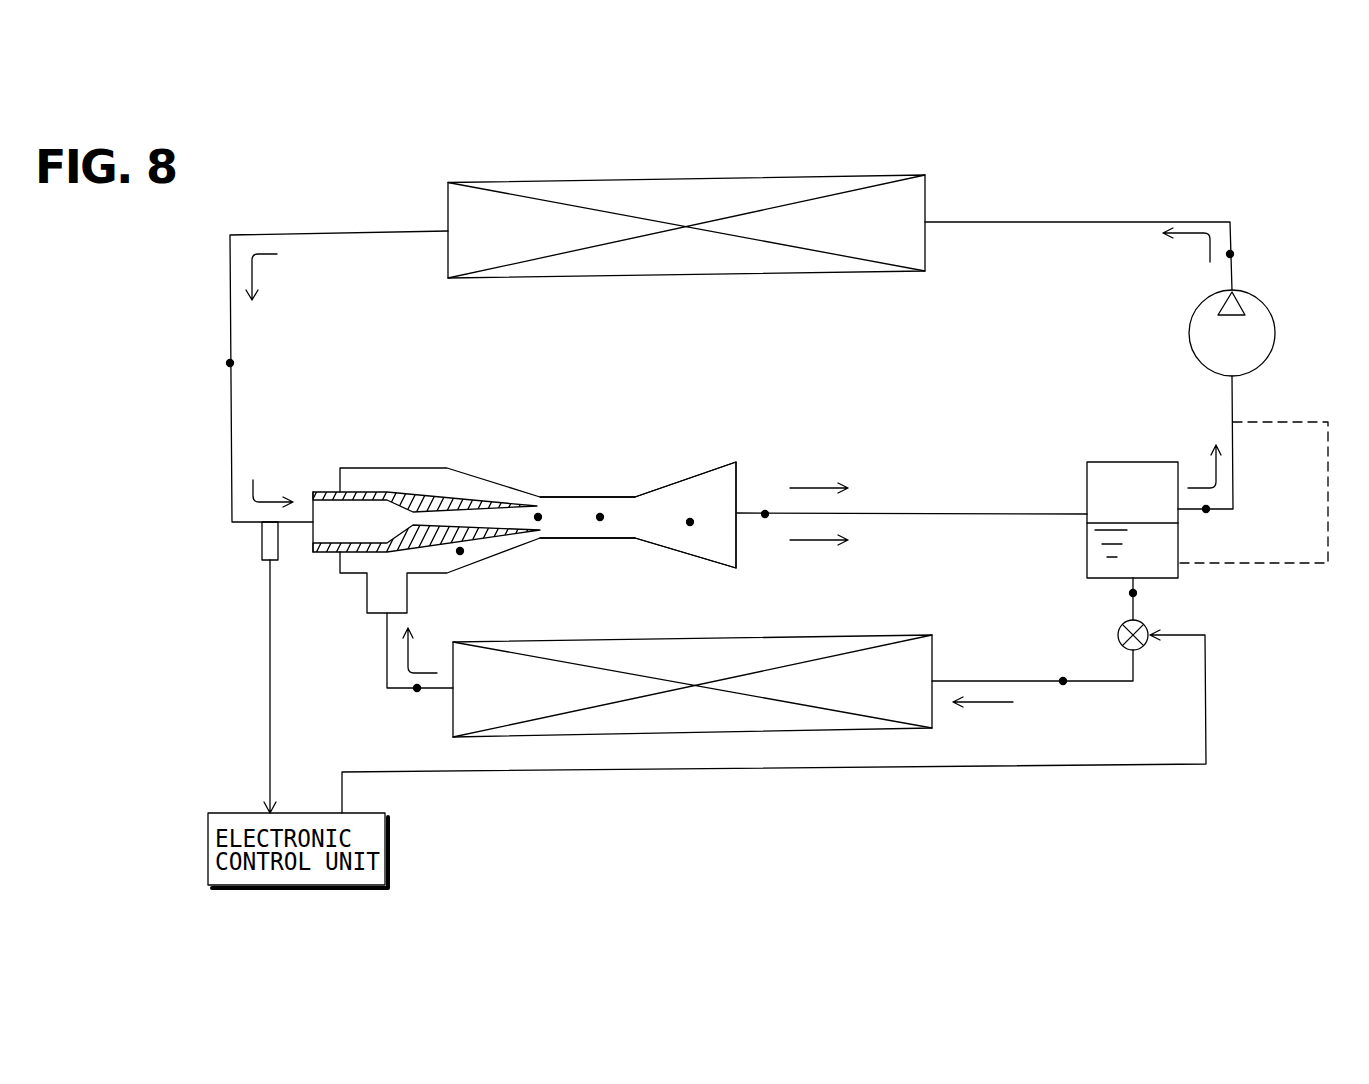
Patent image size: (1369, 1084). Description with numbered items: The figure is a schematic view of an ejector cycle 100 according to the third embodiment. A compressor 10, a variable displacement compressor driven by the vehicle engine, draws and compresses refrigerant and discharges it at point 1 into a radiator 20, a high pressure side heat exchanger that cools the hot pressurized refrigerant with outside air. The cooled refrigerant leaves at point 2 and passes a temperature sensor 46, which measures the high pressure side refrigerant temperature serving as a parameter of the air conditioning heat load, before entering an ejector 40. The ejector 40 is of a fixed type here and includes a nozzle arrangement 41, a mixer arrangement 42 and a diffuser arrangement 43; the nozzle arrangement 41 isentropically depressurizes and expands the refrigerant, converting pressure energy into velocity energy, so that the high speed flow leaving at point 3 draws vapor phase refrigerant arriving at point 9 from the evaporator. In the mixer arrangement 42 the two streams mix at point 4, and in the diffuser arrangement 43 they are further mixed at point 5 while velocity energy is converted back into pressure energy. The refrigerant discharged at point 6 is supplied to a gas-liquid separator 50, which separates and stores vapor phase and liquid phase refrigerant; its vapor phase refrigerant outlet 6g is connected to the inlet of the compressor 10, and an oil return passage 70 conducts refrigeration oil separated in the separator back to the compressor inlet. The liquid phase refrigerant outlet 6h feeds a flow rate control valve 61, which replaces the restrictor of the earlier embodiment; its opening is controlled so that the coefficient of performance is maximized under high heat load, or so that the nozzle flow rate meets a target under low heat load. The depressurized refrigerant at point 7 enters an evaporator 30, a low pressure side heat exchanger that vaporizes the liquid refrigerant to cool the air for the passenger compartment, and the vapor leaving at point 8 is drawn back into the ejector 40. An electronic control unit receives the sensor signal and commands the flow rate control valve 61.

The ejector cycle system 100 is at (379, 194).
The radiator 20 is at (838, 176).
The point 1 is at (1234, 254).
The compressor 10 is at (1275, 331).
The point 2 is at (227, 363).
The temperature sensor 46 is at (261, 541).
The ejector 40 is at (508, 488).
The nozzle arrangement 41 is at (450, 497).
The mixer arrangement 42 is at (620, 510).
The diffuser arrangement 43 is at (697, 472).
The point 9 is at (460, 554).
The point 3 is at (538, 520).
The point 4 is at (600, 520).
The point 5 is at (690, 525).
The point 6 is at (765, 517).
The gas-liquid separator 50 is at (1178, 551).
The vapor phase refrigerant outlet 6g is at (1208, 511).
The liquid phase refrigerant outlet 6h is at (1136, 593).
The flow rate control valve 61 is at (1118, 637).
The oil return passage 70 is at (1326, 566).
The point 7 is at (1063, 685).
The evaporator 30 is at (870, 636).
The point 8 is at (417, 692).